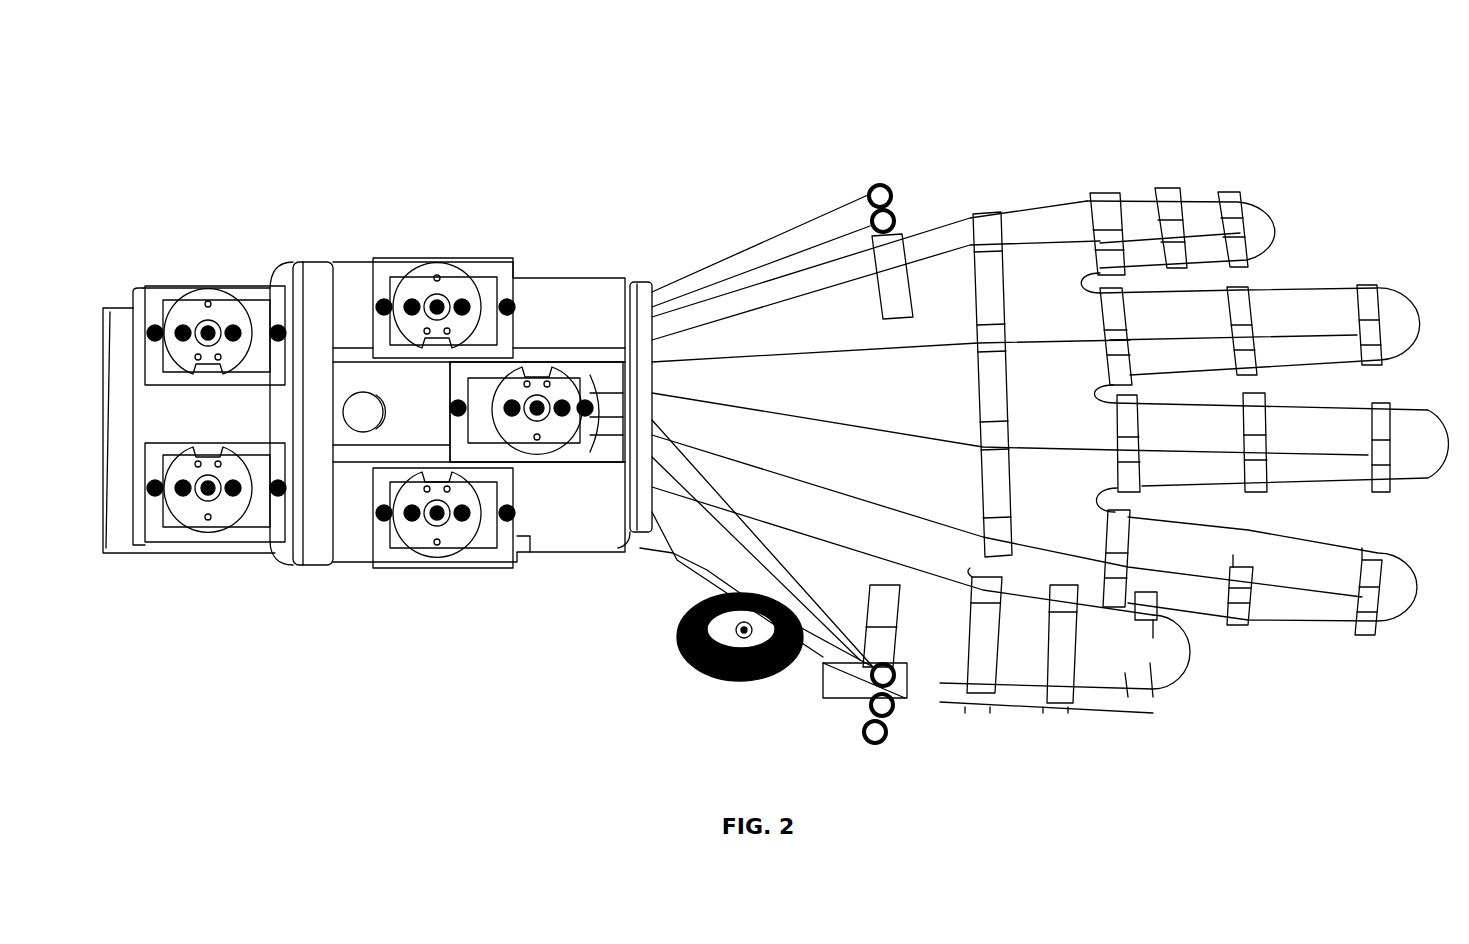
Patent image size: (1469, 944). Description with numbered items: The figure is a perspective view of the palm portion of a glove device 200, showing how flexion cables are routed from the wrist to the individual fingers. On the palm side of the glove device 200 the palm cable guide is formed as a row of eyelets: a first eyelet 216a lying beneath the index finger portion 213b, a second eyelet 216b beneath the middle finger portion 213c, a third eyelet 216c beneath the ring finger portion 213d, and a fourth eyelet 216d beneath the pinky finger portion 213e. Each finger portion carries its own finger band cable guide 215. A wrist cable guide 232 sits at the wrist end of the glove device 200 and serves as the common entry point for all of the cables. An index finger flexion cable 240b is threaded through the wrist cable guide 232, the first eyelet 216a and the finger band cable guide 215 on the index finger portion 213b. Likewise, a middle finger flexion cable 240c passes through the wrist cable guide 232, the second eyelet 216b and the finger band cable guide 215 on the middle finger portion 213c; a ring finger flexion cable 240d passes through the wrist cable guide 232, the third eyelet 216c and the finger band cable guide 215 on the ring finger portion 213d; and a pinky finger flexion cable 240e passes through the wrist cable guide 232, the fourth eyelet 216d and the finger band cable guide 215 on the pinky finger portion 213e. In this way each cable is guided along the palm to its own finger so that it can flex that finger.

The glove device 200 is at (516, 712).
The wrist cable guide 232 is at (643, 290).
The index finger flexion cable 240b is at (895, 508).
The middle finger flexion cable 240c is at (740, 405).
The ring finger flexion cable 240d is at (787, 352).
The pinky finger flexion cable 240e is at (836, 275).
The first eyelet 216a is at (1000, 537).
The second eyelet 216b is at (1000, 440).
The third eyelet 216c is at (990, 330).
The fourth eyelet 216d is at (988, 243).
The finger band cable guide 215 is at (1170, 205).
The index finger portion 213b is at (1296, 615).
The middle finger portion 213c is at (1448, 450).
The ring finger portion 213d is at (1397, 320).
The pinky finger portion 213e is at (1265, 222).